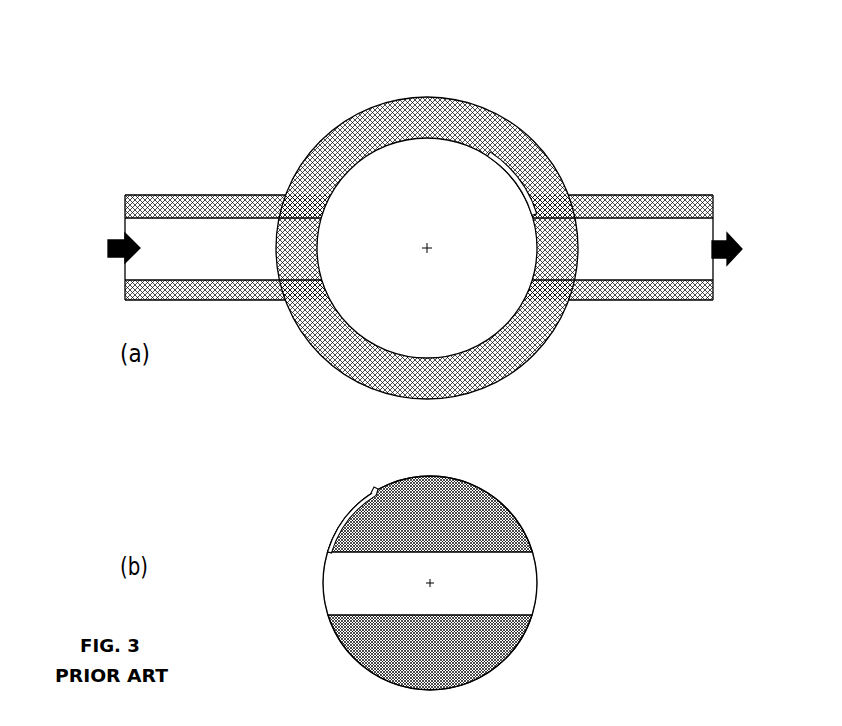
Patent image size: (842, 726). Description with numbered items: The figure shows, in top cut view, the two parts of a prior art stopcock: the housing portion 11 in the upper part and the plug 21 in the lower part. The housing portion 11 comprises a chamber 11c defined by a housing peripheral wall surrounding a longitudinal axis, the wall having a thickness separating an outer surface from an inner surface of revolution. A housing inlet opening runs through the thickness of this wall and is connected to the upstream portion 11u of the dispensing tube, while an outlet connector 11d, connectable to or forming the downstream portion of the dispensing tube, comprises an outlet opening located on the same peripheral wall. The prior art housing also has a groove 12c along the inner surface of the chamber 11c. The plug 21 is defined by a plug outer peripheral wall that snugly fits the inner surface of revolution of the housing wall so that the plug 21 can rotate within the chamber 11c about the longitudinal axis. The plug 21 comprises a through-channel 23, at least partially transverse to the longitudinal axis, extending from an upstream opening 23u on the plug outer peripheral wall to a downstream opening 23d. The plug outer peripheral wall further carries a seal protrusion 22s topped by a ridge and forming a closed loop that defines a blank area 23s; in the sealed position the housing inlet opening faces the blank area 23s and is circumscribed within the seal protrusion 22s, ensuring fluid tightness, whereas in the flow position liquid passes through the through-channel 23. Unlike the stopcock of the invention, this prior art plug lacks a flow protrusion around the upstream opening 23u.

The housing portion 11 is at (297, 342).
The upstream portion 11u is at (228, 194).
The outlet connector 11d is at (667, 194).
The chamber 11c is at (440, 182).
The groove 12c is at (548, 150).
The plug 21 is at (348, 652).
The seal protrusion 22s is at (337, 530).
The blank area 23s is at (343, 513).
The upstream opening 23u is at (333, 585).
The downstream opening 23d is at (543, 570).
The through-channel 23 is at (503, 583).